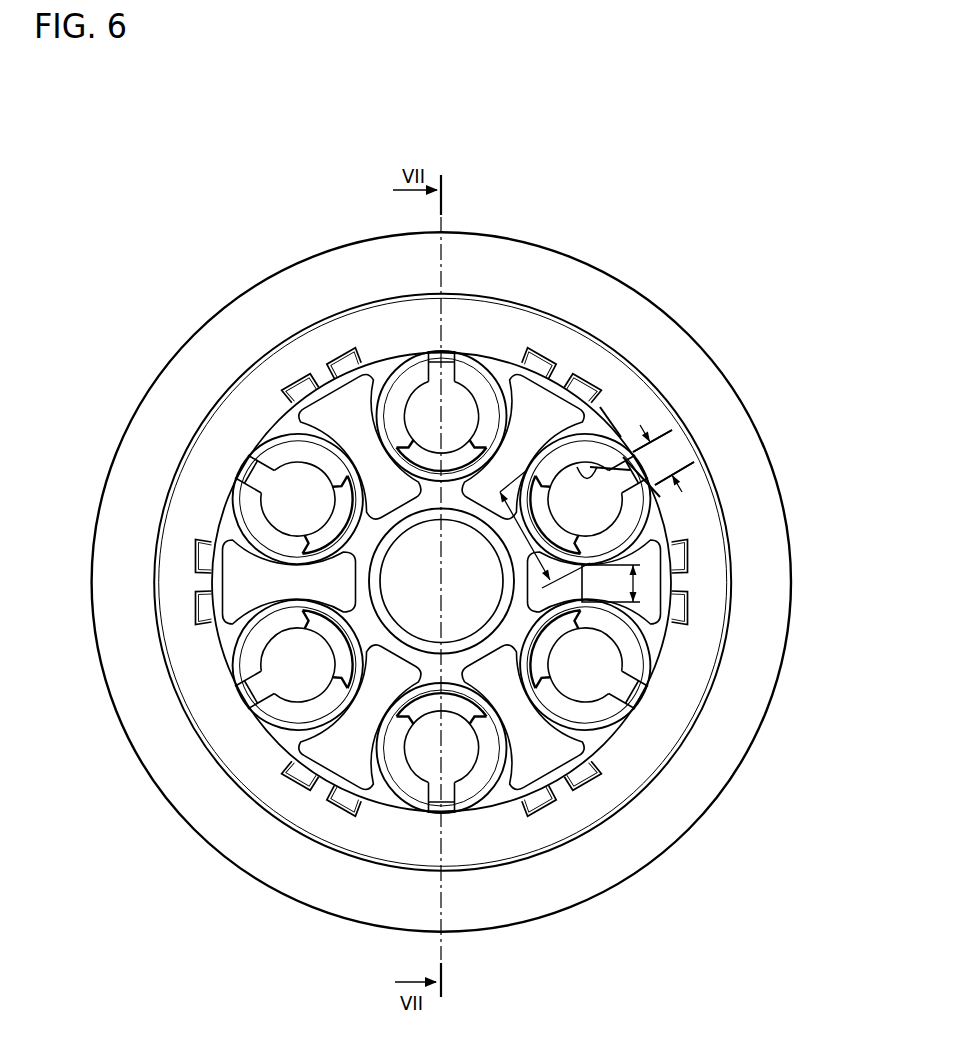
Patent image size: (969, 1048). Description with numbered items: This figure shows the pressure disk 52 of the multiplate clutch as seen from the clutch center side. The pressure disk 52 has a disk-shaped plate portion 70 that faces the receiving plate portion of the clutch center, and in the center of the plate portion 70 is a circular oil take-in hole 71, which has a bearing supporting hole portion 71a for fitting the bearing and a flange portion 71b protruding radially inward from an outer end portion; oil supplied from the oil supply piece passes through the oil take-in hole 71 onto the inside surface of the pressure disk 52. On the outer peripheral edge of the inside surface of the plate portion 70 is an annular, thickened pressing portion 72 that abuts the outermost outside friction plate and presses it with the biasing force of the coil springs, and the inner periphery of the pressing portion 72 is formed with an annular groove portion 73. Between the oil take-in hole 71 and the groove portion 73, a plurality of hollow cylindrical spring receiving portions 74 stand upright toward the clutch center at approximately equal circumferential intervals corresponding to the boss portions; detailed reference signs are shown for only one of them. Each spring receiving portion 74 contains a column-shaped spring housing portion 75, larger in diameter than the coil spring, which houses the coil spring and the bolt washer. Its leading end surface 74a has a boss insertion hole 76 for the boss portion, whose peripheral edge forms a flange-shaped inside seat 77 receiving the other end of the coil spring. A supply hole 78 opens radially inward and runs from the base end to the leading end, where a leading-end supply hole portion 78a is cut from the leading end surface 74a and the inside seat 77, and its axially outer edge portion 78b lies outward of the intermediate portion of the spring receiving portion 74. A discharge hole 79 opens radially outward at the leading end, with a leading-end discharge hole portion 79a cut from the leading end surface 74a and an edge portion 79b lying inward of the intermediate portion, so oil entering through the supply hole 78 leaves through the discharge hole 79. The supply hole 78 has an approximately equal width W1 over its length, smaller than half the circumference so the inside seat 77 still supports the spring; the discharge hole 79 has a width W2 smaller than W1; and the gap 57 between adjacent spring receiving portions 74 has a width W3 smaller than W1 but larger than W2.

The pressure disk 52 is at (230, 173).
The gap 57 is at (625, 635).
The plate portion 70 is at (548, 407).
The oil take-in hole 71 is at (530, 655).
The bearing supporting hole portion 71a is at (478, 628).
The flange portion 71b is at (420, 638).
The pressing portion 72 is at (682, 348).
The groove portion 73 is at (652, 413).
The spring receiving portion 74 is at (277, 430).
The leading end surface 74a is at (673, 541).
The spring housing portion 75 is at (668, 576).
The boss insertion hole 76 is at (592, 462).
The inside seat 77 is at (672, 418).
The supply hole 78 is at (535, 503).
The leading-end supply hole portion 78a is at (545, 511).
The edge portion 78b is at (545, 518).
The discharge hole 79 is at (663, 437).
The leading-end discharge hole portion 79a is at (640, 487).
The edge portion 79b is at (655, 450).
The width of the supply hole W1 is at (525, 537).
The width of the discharge hole W2 is at (662, 458).
The width of the gap W3 is at (640, 583).